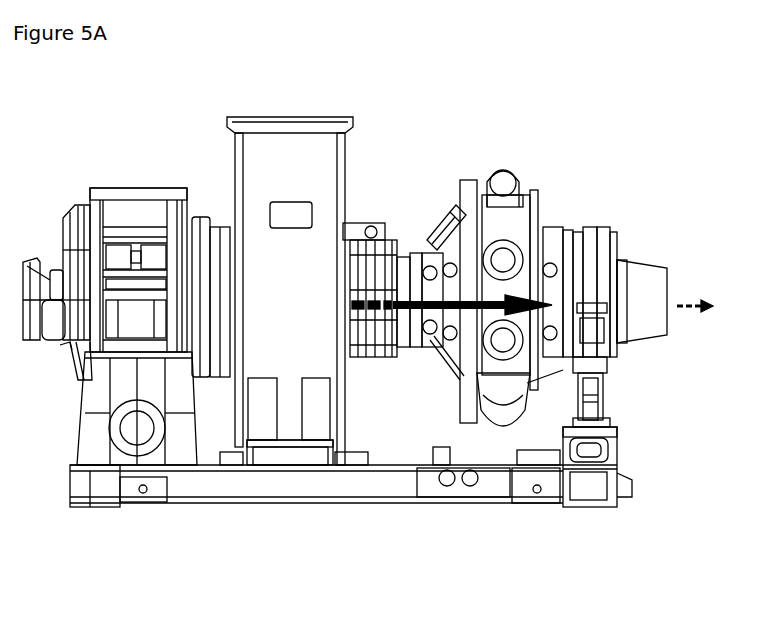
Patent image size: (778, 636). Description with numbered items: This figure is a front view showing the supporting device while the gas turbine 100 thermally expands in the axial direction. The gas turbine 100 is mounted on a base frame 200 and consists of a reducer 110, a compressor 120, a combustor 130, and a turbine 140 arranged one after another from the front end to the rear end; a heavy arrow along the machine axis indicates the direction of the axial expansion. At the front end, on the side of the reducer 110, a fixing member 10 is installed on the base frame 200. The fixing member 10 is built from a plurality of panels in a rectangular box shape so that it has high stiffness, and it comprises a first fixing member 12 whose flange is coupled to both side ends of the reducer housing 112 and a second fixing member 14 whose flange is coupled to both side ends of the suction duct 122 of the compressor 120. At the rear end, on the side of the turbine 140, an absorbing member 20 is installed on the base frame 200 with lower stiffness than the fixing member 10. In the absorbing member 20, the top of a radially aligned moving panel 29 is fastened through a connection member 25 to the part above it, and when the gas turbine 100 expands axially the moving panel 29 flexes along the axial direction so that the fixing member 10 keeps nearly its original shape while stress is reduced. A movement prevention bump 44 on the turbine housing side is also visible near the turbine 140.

The gas turbine 100 is at (108, 153).
The reducer 110 is at (160, 188).
The reducer housing 112 is at (80, 348).
The suction duct 122 is at (333, 162).
The compressor 120 is at (367, 221).
The combustor 130 is at (498, 190).
The turbine 140 is at (580, 230).
The movement prevention bump 44 is at (612, 233).
The connection member 25 is at (596, 384).
The moving panel 29 is at (603, 402).
The absorbing member 20 is at (632, 394).
The first fixing member 12 is at (198, 447).
The second fixing member 14 is at (290, 450).
The fixing member 10 is at (315, 560).
The base frame 200 is at (385, 515).